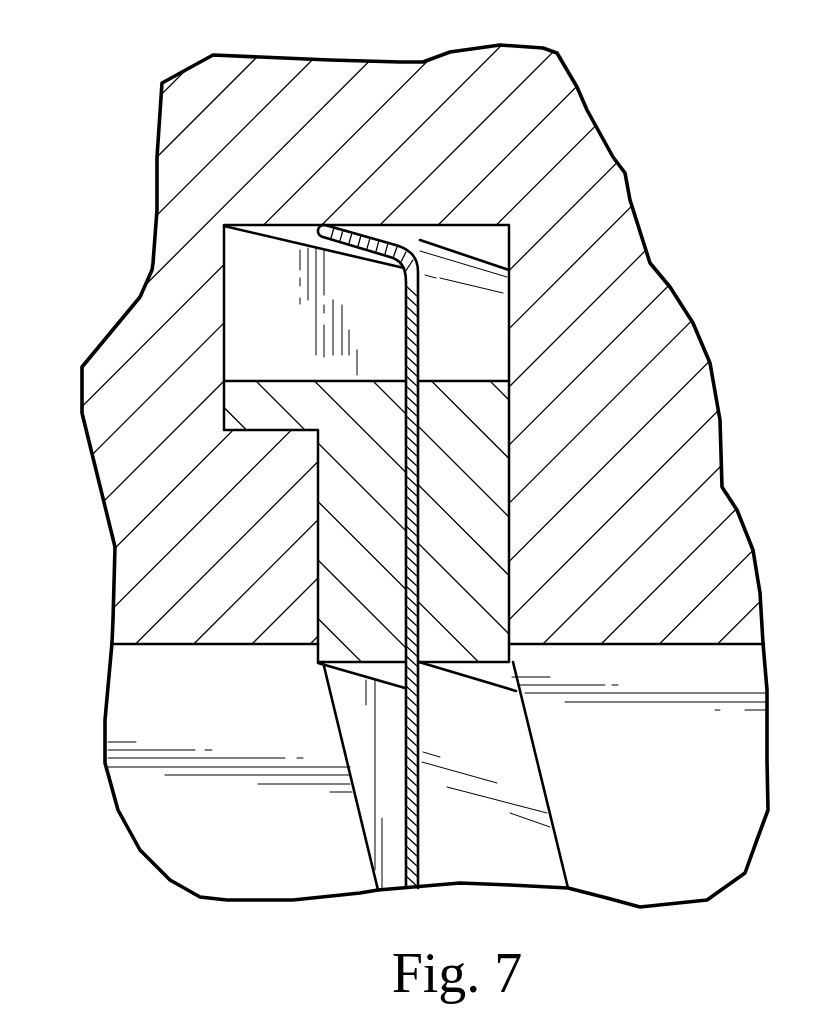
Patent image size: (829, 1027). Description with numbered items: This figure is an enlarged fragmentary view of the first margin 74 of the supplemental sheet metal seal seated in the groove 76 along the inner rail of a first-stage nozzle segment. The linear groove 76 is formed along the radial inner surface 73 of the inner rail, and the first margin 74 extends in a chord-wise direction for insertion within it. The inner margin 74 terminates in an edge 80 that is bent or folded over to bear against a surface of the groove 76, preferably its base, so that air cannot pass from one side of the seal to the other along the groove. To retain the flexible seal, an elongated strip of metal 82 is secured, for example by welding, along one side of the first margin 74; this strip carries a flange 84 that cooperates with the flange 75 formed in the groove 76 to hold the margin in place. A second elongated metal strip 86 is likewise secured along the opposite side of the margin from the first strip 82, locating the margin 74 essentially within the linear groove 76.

The radial inner surface 73 is at (142, 643).
The first margin 74 is at (453, 322).
The flange 75 is at (233, 578).
The groove 76 is at (253, 288).
The edge 80 is at (328, 240).
The elongated strip of metal 82 is at (362, 633).
The flange 84 is at (247, 410).
The elongated metal strip 86 is at (472, 632).